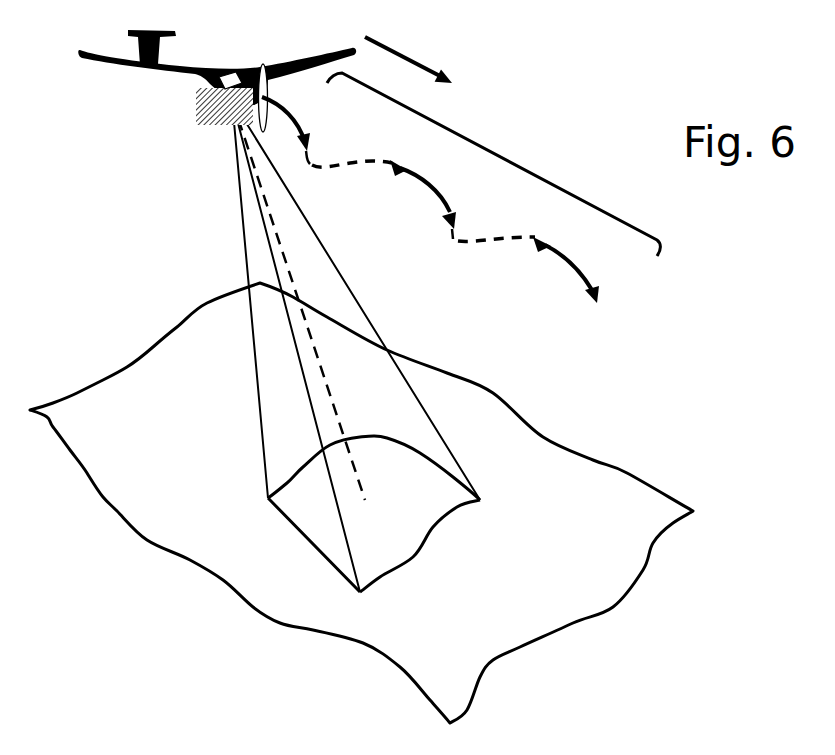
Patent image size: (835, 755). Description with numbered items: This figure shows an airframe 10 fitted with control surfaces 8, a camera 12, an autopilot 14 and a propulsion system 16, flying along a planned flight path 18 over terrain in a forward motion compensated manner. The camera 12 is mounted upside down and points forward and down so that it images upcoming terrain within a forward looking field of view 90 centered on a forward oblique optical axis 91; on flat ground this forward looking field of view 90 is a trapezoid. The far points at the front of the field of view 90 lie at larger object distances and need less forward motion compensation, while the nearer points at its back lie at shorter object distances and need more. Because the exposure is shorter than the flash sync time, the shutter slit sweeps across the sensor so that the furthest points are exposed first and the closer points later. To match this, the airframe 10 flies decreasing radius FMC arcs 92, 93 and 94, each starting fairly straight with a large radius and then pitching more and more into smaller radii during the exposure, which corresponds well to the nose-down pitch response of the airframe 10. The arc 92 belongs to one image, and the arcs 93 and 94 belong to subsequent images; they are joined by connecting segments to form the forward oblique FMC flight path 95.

The control surfaces 8 is at (135, 67).
The airframe 10 is at (217, 81).
The camera 12 is at (197, 120).
The autopilot 14 is at (232, 72).
The propulsion system 16 is at (267, 68).
The planned flight path 18 is at (410, 56).
The forward looking field of view 90 is at (292, 522).
The forward oblique optical axis 91 is at (367, 500).
The decreasing radius FMC arc 92 is at (297, 112).
The decreasing radius FMC arc 93 is at (428, 184).
The decreasing radius FMC arc 94 is at (572, 256).
The forward oblique FMC flight path 95 is at (520, 165).